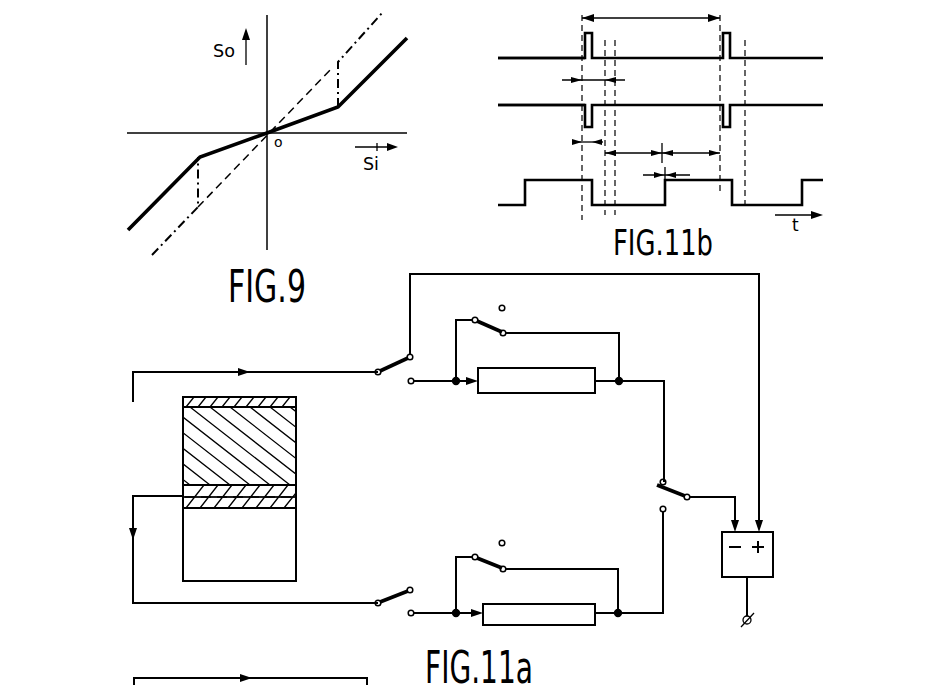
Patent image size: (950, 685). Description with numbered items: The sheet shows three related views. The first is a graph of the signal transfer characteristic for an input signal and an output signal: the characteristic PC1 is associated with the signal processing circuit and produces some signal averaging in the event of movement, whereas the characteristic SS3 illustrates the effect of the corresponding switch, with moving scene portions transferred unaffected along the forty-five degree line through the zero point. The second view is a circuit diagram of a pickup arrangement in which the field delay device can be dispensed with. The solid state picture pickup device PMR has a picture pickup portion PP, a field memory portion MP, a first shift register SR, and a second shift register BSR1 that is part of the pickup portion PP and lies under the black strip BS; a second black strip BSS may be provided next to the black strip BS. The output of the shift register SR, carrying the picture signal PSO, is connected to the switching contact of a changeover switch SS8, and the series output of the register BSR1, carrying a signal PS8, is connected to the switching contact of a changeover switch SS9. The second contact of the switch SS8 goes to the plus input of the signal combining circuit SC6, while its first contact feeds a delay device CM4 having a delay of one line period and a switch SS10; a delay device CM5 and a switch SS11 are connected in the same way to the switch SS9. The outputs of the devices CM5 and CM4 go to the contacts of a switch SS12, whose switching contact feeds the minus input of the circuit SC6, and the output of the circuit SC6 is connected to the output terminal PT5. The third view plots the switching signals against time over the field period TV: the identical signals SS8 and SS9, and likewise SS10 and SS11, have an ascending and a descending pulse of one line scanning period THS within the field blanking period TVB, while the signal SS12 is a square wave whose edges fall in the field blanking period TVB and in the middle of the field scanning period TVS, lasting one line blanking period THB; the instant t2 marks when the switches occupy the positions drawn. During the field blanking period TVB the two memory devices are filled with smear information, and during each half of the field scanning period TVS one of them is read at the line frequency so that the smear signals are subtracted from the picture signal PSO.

In FIG. 9, the signal processing circuit characteristic PC1 is at (305, 63).
In FIG. 9, the switch characteristic SS3 is at (333, 77).
In FIG. 11B, the changeover switch SS8 is at (633, 44).
In FIG. 11A, the changeover switch SS8 is at (393, 375).
In FIG. 11B, the changeover switch SS9 is at (514, 60).
In FIG. 11A, the changeover switch SS9 is at (395, 598).
In FIG. 11B, the switch SS10 is at (633, 110).
In FIG. 11A, the switch SS10 is at (476, 318).
In FIG. 11B, the switch SS11 is at (514, 119).
In FIG. 11A, the switch SS11 is at (478, 554).
In FIG. 11B, the switch SS12 is at (633, 188).
In FIG. 11A, the switch SS12 is at (676, 490).
In FIG. 11B, the field period TV is at (651, 28).
In FIG. 11B, the field blanking period TVB is at (598, 80).
In FIG. 11B, the field scanning period TVS is at (651, 131).
In FIG. 11B, the line scanning period THS is at (587, 146).
In FIG. 11B, the line blanking period THB is at (656, 168).
In FIG. 11B, the instant t2 is at (615, 205).
In FIG. 11A, the picture signal PSO is at (250, 678).
In FIG. 11A, the signal PS8 is at (253, 549).
In FIG. 11A, the solid state picture pickup device PMR is at (164, 465).
In FIG. 11A, the output shift register SR is at (297, 402).
In FIG. 11A, the field memory portion MP is at (297, 445).
In FIG. 11A, the opaque strip BS is at (297, 484).
In FIG. 11A, the second shift register BSR1 is at (297, 492).
In FIG. 11A, the second black strip BSS is at (297, 503).
In FIG. 11A, the picture pickup portion PP is at (297, 541).
In FIG. 11A, the delay device CM4 is at (508, 394).
In FIG. 11A, the delay device CM5 is at (513, 626).
In FIG. 11A, the signal combining circuit SC6 is at (722, 558).
In FIG. 11A, the output terminal PT5 is at (730, 603).